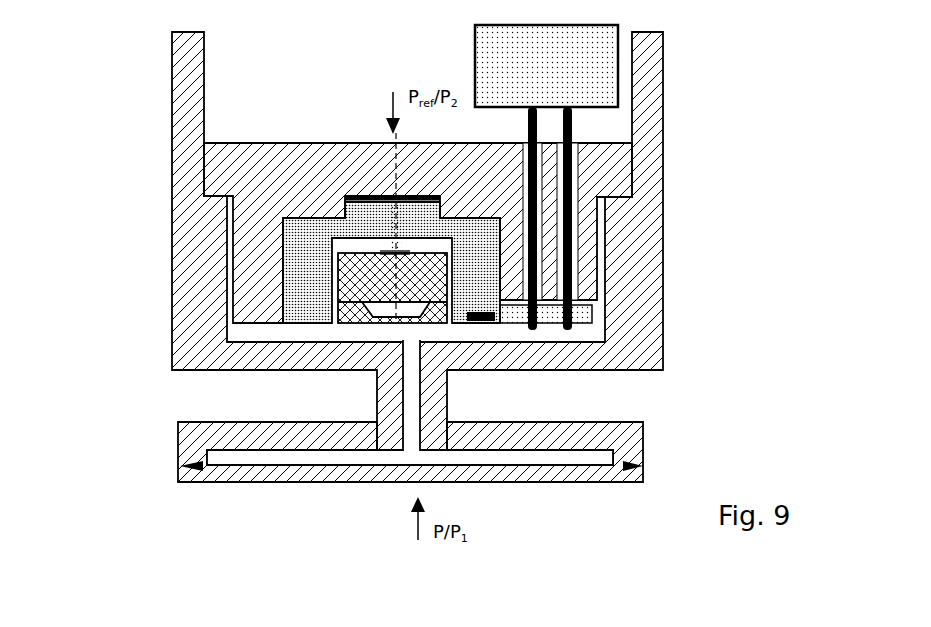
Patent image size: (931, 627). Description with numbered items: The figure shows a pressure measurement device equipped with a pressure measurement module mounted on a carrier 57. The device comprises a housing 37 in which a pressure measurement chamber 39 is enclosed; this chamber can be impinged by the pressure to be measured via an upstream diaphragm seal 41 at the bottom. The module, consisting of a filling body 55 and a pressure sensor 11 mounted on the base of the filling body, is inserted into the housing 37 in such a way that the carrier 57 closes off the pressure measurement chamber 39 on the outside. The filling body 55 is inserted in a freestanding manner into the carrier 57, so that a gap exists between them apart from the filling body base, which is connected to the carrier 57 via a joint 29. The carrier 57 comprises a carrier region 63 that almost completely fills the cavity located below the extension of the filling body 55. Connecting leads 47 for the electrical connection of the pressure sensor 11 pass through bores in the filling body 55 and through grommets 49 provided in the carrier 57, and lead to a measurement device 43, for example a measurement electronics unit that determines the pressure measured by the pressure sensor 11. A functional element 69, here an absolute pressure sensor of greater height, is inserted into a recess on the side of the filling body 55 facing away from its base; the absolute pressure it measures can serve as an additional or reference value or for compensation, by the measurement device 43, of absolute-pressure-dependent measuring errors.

The pressure sensor 11 is at (383, 325).
The joint 29 is at (373, 202).
The housing 37 is at (192, 228).
The pressure measurement chamber 39 is at (392, 321).
The diaphragm seal 41 is at (210, 437).
The measurement device 43 is at (559, 80).
The connecting leads 47 is at (537, 247).
The grommets 49 is at (527, 170).
The filling body 55 is at (308, 308).
The carrier 57 is at (287, 168).
The carrier region 63 is at (594, 221).
The functional element 69 is at (485, 330).